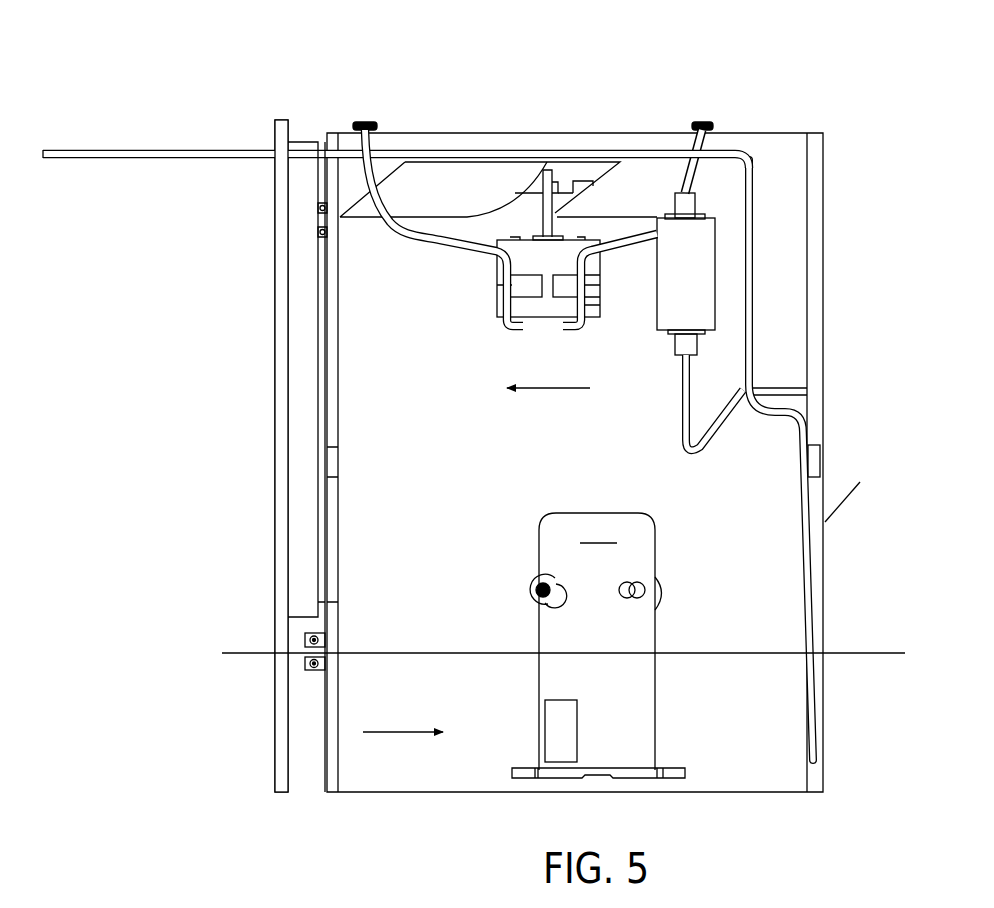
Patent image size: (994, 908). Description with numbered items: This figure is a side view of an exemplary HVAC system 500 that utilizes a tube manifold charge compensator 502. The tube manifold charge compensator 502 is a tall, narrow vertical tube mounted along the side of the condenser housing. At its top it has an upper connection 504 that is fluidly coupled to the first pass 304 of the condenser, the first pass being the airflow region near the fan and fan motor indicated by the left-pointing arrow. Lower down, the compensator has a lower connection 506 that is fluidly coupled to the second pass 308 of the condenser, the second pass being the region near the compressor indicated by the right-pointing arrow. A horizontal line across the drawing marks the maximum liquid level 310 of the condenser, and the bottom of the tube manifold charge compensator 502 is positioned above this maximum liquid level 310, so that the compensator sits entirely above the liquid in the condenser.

The HVAC system 500 is at (150, 100).
The upper connection 504 is at (334, 151).
The tube manifold charge compensator 502 is at (300, 437).
The lower connection 506 is at (325, 603).
The maximum liquid level 310 is at (430, 651).
The first pass 304 is at (548, 387).
The second pass 308 is at (413, 731).